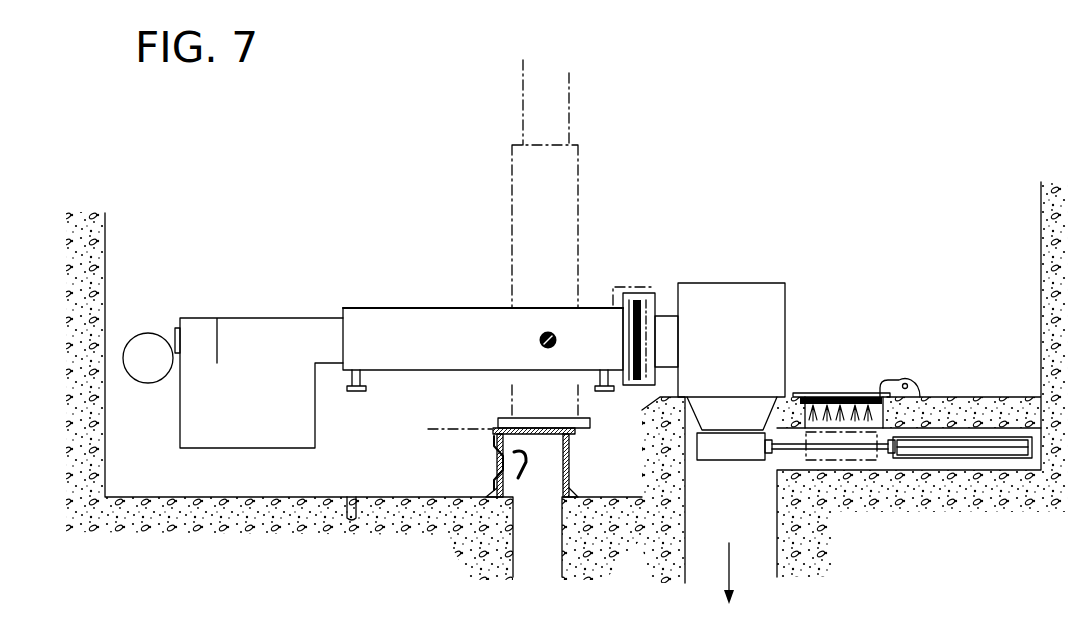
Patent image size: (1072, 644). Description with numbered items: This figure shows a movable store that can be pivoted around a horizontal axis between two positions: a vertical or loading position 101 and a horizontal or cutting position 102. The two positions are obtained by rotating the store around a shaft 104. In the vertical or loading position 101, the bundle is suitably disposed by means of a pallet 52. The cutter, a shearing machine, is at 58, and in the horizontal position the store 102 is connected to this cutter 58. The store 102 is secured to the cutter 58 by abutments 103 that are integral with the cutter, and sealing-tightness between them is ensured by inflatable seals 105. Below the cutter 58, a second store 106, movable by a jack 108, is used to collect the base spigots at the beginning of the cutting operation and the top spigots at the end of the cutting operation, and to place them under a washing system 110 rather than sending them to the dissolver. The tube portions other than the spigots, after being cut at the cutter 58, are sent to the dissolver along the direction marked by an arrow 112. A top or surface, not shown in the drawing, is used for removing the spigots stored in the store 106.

The pallet 52 is at (497, 465).
The cutter 58 is at (738, 348).
The vertical or loading position 101 is at (578, 155).
The horizontal or cutting position 102 is at (353, 313).
The abutments 103 is at (623, 291).
The shaft 104 is at (539, 336).
The inflatable seals 105 is at (655, 303).
The store 106 is at (738, 447).
The jack 108 is at (940, 446).
The washing system 110 is at (845, 392).
The arrow 112 is at (733, 578).